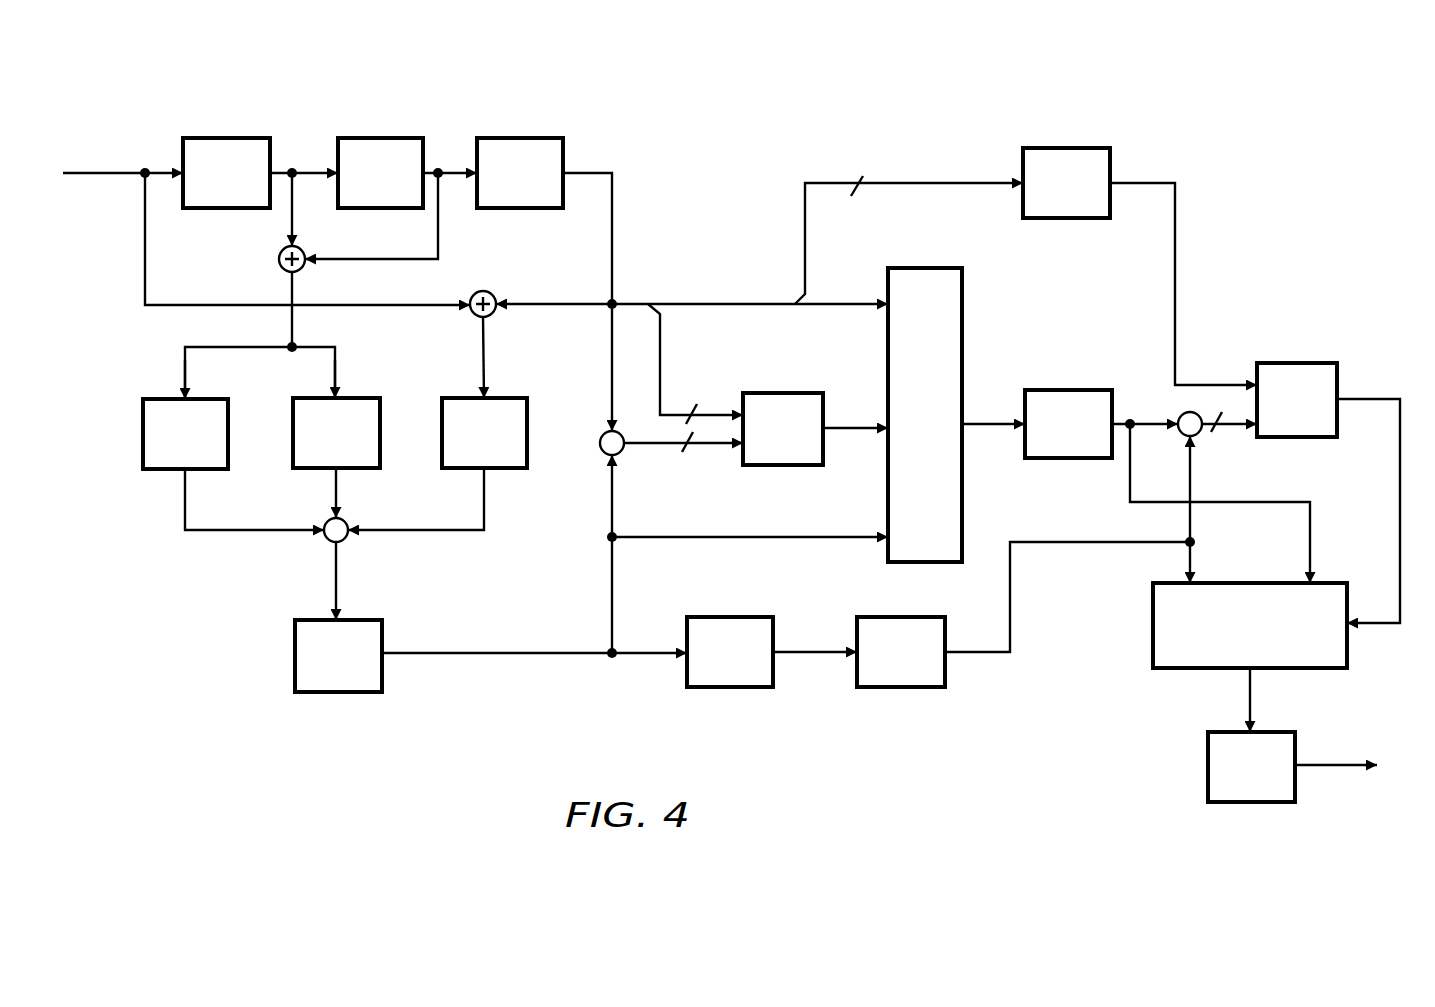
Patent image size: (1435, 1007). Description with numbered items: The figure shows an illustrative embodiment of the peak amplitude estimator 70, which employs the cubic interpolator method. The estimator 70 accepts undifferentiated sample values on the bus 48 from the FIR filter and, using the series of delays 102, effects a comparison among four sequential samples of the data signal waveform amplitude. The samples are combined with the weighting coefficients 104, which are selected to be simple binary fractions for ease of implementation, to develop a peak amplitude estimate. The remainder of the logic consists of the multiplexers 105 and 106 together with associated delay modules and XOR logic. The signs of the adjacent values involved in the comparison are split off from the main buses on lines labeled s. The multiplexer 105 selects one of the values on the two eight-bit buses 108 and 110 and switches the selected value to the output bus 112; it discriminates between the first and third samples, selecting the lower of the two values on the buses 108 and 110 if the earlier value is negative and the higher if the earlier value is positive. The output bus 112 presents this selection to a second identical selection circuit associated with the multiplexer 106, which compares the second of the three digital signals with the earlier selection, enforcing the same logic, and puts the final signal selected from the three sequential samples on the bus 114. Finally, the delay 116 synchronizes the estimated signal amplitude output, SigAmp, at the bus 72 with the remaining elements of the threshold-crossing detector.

The peak amplitude estimator 70 is at (773, 150).
The bus 48 is at (92, 176).
The series of delays 102 is at (500, 138).
The weighting coefficients 104 is at (143, 434).
The multiplexer 105 is at (962, 317).
The multiplexer 106 is at (1172, 668).
The bus 108 is at (828, 305).
The bus 110 is at (790, 537).
The output bus 112 is at (985, 425).
The bus 114 is at (1250, 700).
The delay 116 is at (1208, 772).
The bus 72 is at (1320, 765).